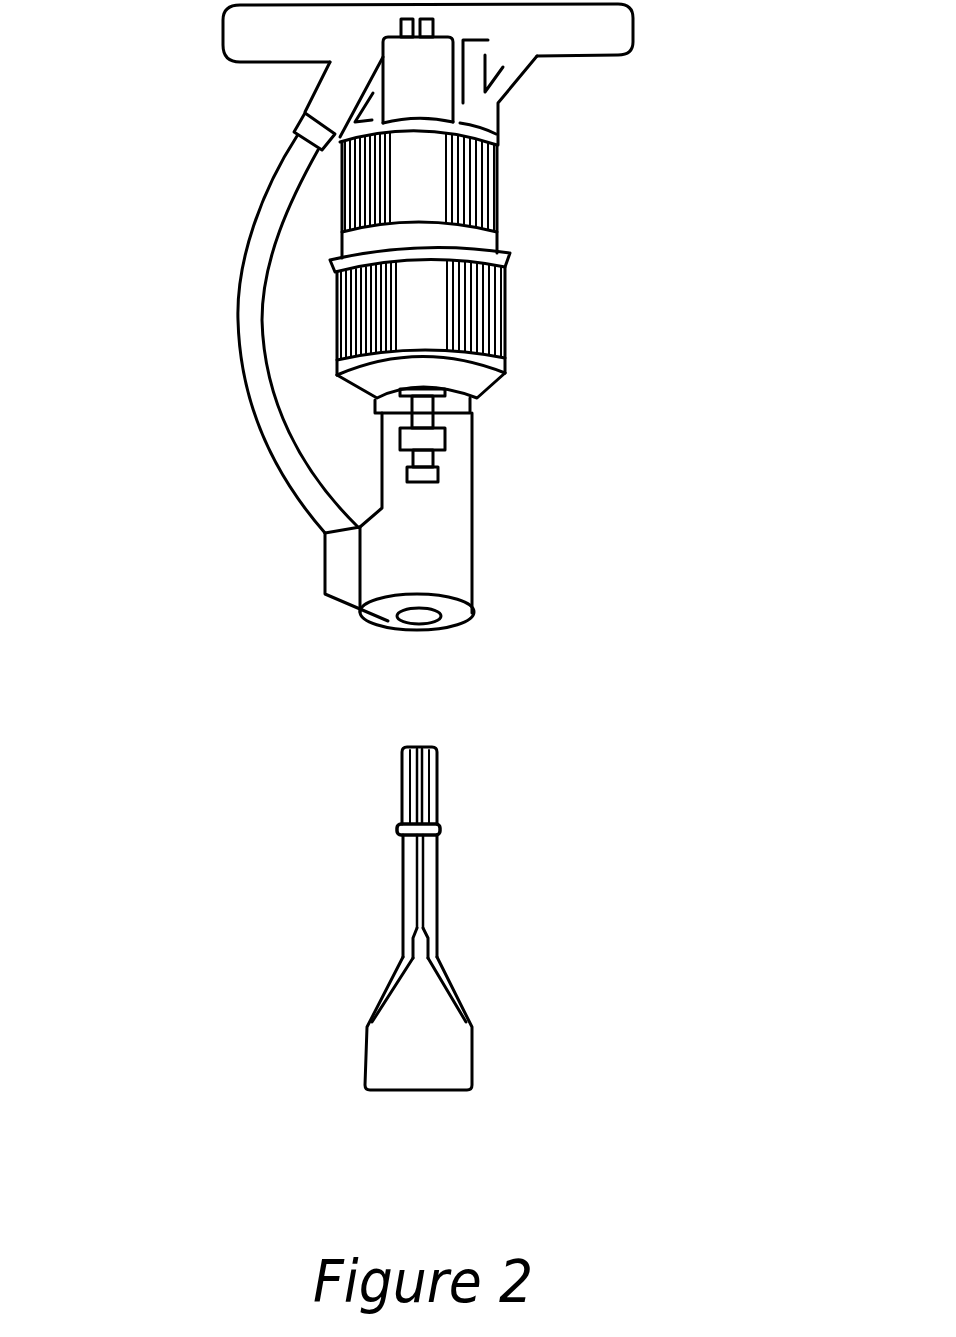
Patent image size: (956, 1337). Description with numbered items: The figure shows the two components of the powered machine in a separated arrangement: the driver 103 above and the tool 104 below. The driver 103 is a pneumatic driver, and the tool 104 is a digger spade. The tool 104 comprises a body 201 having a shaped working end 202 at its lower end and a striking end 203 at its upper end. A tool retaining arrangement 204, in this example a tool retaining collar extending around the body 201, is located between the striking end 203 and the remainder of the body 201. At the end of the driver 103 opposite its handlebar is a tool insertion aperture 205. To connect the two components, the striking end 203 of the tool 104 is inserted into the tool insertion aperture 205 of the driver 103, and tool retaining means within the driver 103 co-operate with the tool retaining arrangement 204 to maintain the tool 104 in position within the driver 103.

The driver 103 is at (525, 283).
The tool 104 is at (450, 898).
The body 201 is at (427, 885).
The shaped working end 202 is at (442, 1063).
The striking end 203 is at (427, 787).
The tool retaining arrangement 204 is at (397, 830).
The tool insertion aperture 205 is at (415, 615).